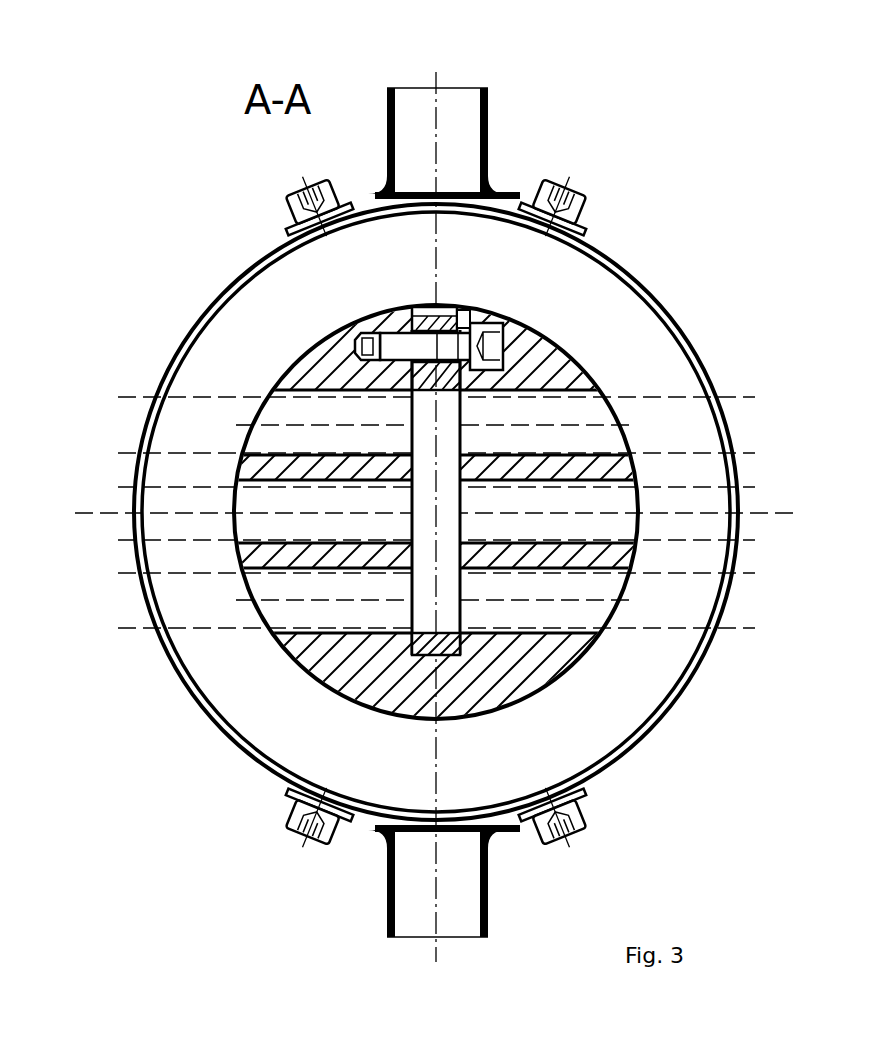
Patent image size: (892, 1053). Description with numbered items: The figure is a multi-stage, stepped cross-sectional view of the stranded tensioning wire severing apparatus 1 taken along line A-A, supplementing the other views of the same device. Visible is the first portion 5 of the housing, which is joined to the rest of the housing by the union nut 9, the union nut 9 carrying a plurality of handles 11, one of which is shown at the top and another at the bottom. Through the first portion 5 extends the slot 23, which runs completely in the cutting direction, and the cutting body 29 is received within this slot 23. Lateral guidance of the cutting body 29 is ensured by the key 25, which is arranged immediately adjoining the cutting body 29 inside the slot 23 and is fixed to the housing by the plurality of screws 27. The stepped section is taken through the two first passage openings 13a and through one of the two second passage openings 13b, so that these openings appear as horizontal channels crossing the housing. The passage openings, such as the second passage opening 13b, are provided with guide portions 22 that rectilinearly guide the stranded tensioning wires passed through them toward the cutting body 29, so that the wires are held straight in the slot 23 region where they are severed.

The stranded tensioning wire severing apparatus 1 is at (170, 185).
The first portion 5 is at (322, 352).
The union nut 9 is at (240, 330).
The handle 11 is at (463, 103).
The first passage opening 13a is at (272, 414).
The second passage opening 13b is at (246, 525).
The guide portion 22 is at (560, 556).
The slot 23 is at (447, 292).
The key 25 is at (463, 297).
The screw connection 27 is at (517, 355).
The cutting body 29 is at (463, 647).